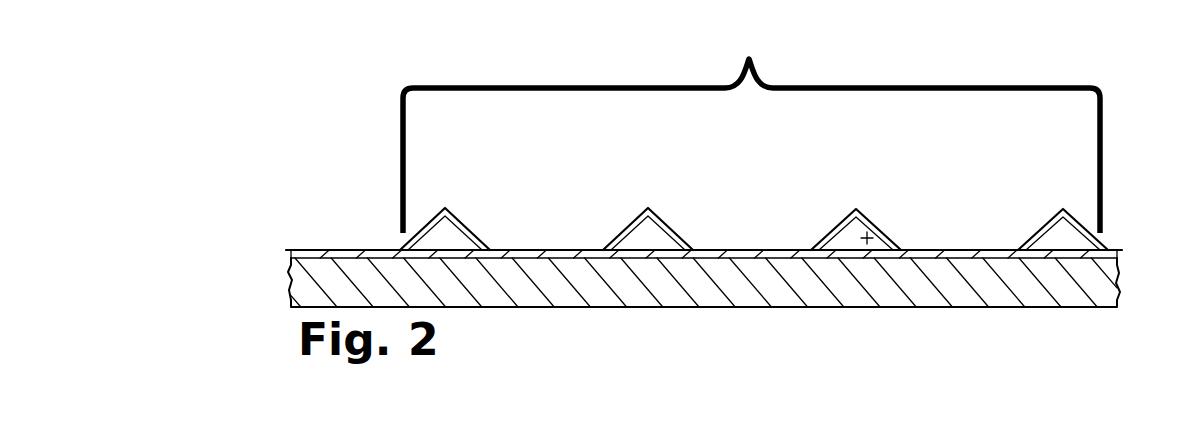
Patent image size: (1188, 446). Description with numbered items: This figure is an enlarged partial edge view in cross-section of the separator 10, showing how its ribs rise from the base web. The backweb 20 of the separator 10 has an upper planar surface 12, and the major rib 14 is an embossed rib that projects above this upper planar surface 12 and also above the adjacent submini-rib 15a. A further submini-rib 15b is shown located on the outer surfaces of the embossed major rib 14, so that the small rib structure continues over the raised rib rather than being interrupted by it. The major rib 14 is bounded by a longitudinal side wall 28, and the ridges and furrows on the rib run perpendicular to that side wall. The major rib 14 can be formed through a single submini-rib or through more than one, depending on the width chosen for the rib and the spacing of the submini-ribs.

The separator 10 is at (345, 97).
The upper planar surface 12 is at (343, 260).
The major rib 14 is at (751, 128).
The submini-rib 15a is at (317, 252).
The submini-rib 15b is at (463, 226).
The backweb 20 is at (888, 295).
The longitudinal side wall 28 is at (872, 237).